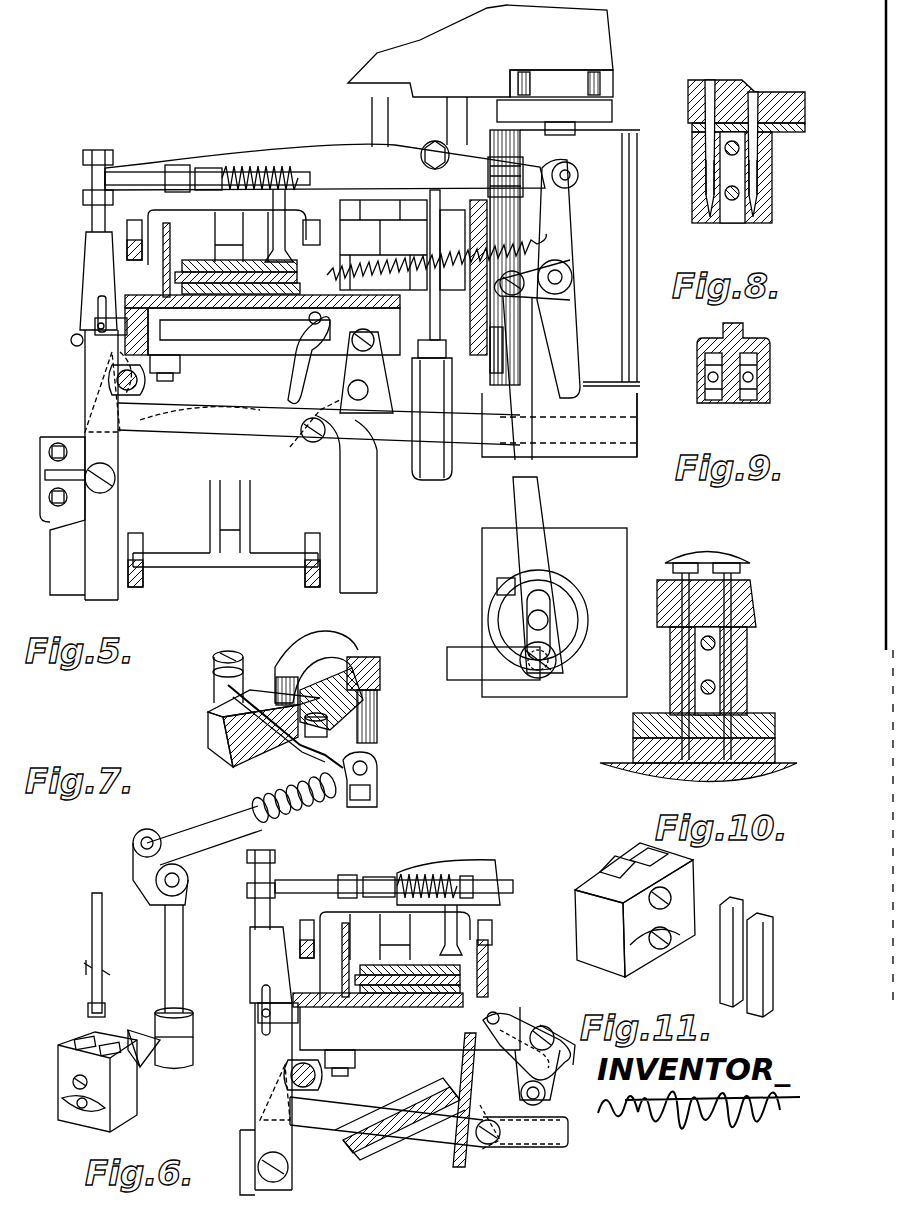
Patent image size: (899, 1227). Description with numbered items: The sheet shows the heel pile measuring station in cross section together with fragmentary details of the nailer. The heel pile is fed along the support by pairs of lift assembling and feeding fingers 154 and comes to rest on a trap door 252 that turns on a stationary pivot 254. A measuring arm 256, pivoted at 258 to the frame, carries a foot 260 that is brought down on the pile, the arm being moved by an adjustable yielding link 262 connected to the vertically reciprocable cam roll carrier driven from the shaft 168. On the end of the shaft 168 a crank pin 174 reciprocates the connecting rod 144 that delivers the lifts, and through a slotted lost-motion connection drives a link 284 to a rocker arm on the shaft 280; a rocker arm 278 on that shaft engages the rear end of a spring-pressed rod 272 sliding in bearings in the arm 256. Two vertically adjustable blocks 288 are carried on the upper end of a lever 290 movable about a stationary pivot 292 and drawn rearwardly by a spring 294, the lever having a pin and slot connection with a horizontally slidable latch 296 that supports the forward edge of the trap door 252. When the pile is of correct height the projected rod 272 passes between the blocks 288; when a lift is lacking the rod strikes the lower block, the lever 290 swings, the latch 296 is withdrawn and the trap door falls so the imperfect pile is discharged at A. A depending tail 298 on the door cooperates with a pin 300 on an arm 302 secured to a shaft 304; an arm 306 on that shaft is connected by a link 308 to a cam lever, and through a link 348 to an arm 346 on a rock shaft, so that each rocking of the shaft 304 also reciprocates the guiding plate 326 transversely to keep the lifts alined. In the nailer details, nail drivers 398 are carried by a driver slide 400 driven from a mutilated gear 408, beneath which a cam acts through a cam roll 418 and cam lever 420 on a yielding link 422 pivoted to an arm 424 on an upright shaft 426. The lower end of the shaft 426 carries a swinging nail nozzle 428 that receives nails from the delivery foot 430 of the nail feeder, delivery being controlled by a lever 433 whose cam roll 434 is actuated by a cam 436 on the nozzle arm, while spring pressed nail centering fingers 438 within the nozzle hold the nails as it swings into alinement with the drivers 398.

In FIG. 5, the connecting rod 144 is at (455, 650).
In FIG. 5, the lift assembling and feeding fingers 154 is at (212, 252).
In FIG. 5, the shaft 168 is at (546, 612).
In FIG. 5, the crank pin 174 is at (556, 672).
In FIG. 5, the trap door 252 is at (205, 310).
In FIG. 6, the trap door 252 is at (463, 1075).
In FIG. 5, the stationary pivot 254 is at (310, 320).
In FIG. 6, the stationary pivot 254 is at (498, 1012).
In FIG. 5, the measuring arm 256 is at (345, 160).
In FIG. 6, the measuring arm 256 is at (463, 868).
In FIG. 5, the pivot 258 is at (568, 168).
In FIG. 5, the foot 260 is at (280, 200).
In FIG. 6, the foot 260 is at (460, 952).
In FIG. 5, the adjustable yielding link 262 is at (470, 387).
In FIG. 5, the rod 272 is at (148, 177).
In FIG. 6, the rod 272 is at (505, 885).
In FIG. 5, the rocker arm 278 is at (560, 238).
In FIG. 5, the shaft 280 is at (565, 277).
In FIG. 5, the link 284 is at (532, 505).
In FIG. 5, the vertically adjustable blocks 288 is at (85, 195).
In FIG. 6, the vertically adjustable blocks 288 is at (270, 892).
In FIG. 5, the lever 290 is at (97, 272).
In FIG. 6, the lever 290 is at (272, 968).
In FIG. 5, the stationary pivot 292 is at (115, 478).
In FIG. 6, the stationary pivot 292 is at (290, 1167).
In FIG. 5, the spring 294 is at (74, 346).
In FIG. 5, the latch 296 is at (128, 324).
In FIG. 6, the latch 296 is at (300, 1015).
In FIG. 5, the depending tail 298 is at (290, 370).
In FIG. 6, the depending tail 298 is at (512, 1035).
In FIG. 5, the pin 300 is at (375, 343).
In FIG. 6, the pin 300 is at (555, 1040).
In FIG. 6, the arm 302 is at (545, 1093).
In FIG. 5, the shaft 304 is at (368, 391).
In FIG. 6, the shaft 304 is at (540, 1100).
In FIG. 5, the arm 306 is at (325, 405).
In FIG. 6, the arm 306 is at (475, 1115).
In FIG. 5, the link 308 is at (640, 412).
In FIG. 6, the link 308 is at (540, 1140).
In FIG. 5, the plate 326 is at (165, 268).
In FIG. 6, the plate 326 is at (362, 960).
In FIG. 5, the arm 346 is at (100, 386).
In FIG. 6, the arm 346 is at (291, 1090).
In FIG. 5, the link 348 is at (240, 435).
In FIG. 6, the link 348 is at (332, 1117).
In FIG. 10, the nail drivers 398 is at (752, 600).
In FIG. 10, the driver slide 400 is at (732, 540).
In FIG. 7, the mutilated gear 408 is at (315, 645).
In FIG. 7, the cam roll 418 is at (285, 739).
In FIG. 7, the cam lever 420 is at (258, 692).
In FIG. 7, the yielding link 422 is at (240, 820).
In FIG. 7, the arm 424 is at (133, 866).
In FIG. 7, the upright shaft 426 is at (185, 960).
In FIG. 8, the nail nozzle 428 is at (770, 195).
In FIG. 9, the nail nozzle 428 is at (700, 400).
In FIG. 10, the nail nozzle 428 is at (748, 672).
In FIG. 7, the nail nozzle 428 is at (62, 1082).
In FIG. 11, the nail nozzle 428 is at (688, 897).
In FIG. 8, the delivery foot 430 is at (730, 100).
In FIG. 7, the lever 433 is at (103, 952).
In FIG. 7, the cam roll 434 is at (108, 1010).
In FIG. 7, the cam 436 is at (145, 1045).
In FIG. 9, the nail centering fingers 438 is at (758, 368).
In FIG. 11, the nail centering fingers 438 is at (768, 962).
In FIG. 6, the discharged imperfect heel pile A is at (420, 1093).